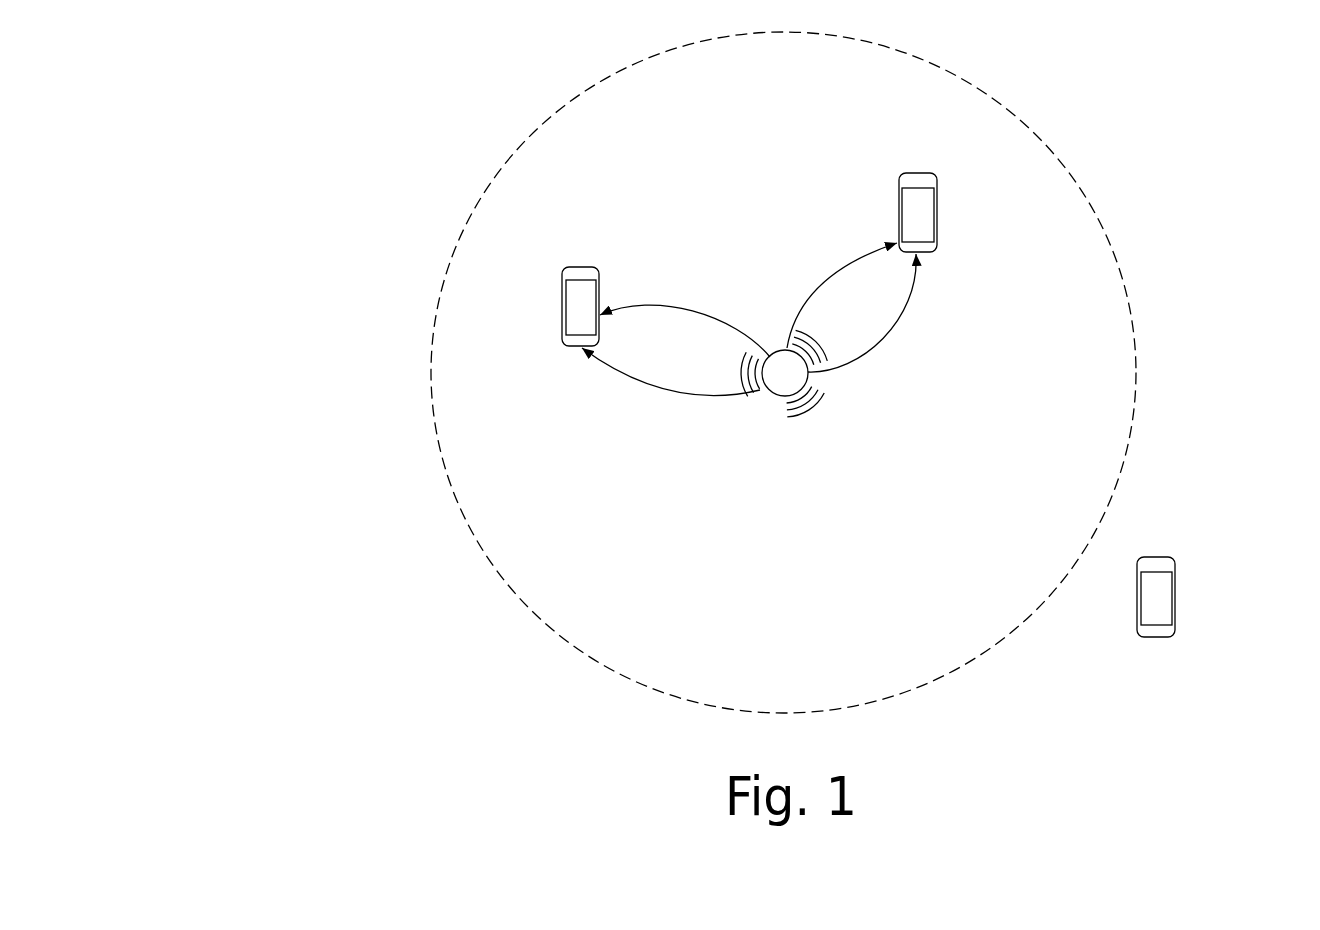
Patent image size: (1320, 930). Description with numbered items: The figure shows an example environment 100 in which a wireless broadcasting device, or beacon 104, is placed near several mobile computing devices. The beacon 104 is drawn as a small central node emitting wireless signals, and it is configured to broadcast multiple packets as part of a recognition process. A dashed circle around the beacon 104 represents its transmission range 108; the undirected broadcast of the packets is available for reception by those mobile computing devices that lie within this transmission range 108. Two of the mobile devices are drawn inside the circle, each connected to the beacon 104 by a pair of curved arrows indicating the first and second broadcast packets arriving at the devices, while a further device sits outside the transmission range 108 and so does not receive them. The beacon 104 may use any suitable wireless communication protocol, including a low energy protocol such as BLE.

The environment 100 is at (260, 70).
The wireless broadcasting device 104 is at (787, 395).
The transmission range 108 is at (518, 140).